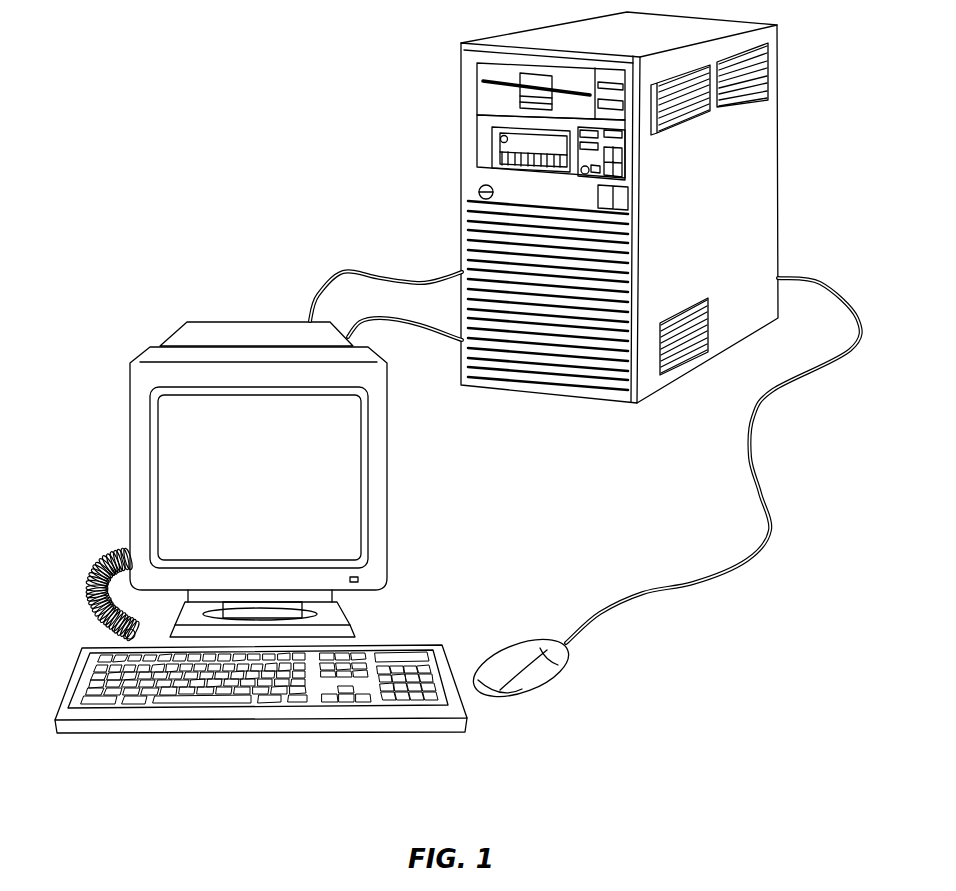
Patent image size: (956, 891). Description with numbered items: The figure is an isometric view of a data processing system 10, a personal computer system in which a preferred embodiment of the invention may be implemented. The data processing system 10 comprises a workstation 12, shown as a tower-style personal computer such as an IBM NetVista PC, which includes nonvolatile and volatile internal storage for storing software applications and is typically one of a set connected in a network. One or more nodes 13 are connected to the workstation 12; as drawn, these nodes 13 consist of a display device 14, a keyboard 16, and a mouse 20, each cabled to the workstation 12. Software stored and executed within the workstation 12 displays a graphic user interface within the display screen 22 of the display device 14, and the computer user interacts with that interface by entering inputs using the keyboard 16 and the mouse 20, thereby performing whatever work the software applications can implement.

The data processing system 10 is at (316, 148).
The workstation 12 is at (472, 180).
The nodes 13 is at (128, 314).
The display device 14 is at (268, 330).
The keyboard 16 is at (303, 727).
The mouse 20 is at (537, 668).
The display screen 22 is at (333, 490).